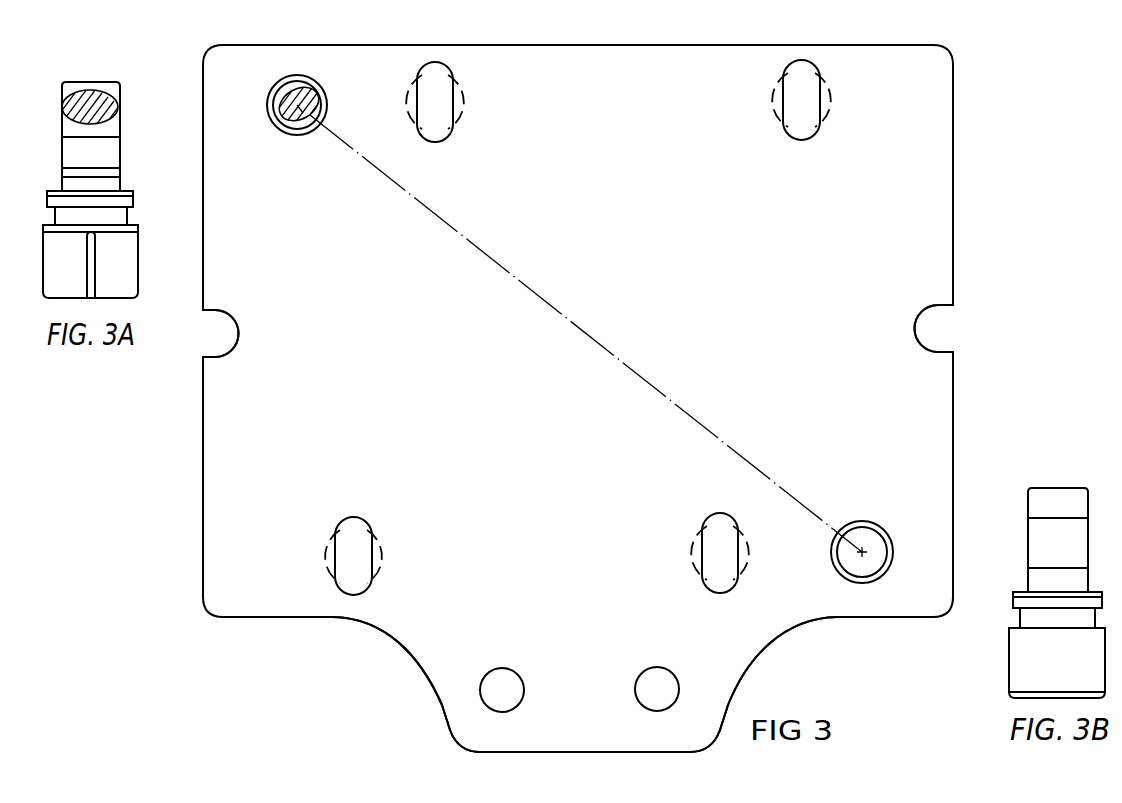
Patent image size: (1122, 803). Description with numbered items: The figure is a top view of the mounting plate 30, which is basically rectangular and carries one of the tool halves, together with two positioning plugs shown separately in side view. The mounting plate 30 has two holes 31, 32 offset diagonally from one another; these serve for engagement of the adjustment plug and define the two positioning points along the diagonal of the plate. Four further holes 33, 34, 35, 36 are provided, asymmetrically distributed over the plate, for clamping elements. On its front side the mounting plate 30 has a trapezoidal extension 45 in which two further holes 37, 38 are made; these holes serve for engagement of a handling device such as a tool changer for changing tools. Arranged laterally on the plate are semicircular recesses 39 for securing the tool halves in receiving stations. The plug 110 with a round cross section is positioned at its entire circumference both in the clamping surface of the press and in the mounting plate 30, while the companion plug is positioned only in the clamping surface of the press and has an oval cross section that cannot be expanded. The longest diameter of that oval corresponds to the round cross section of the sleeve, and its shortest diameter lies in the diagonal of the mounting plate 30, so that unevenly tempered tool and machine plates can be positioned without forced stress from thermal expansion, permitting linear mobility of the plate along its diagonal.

In FIG. 3, the mounting plate 30 is at (940, 166).
In FIG. 3, the hole 31 is at (314, 100).
In FIG. 3, the hole 32 is at (861, 530).
In FIG. 3, the hole 33 is at (432, 140).
In FIG. 3, the hole 34 is at (792, 128).
In FIG. 3, the hole 35 is at (356, 525).
In FIG. 3, the hole 36 is at (728, 527).
In FIG. 3, the hole 37 is at (508, 674).
In FIG. 3, the hole 38 is at (661, 674).
In FIG. 3, the semicircular recess 39 is at (228, 340).
In FIG. 3, the trapezoidal extension 45 is at (437, 700).
In FIG. 3A, the plug 110 is at (99, 168).
In FIG. 3B, the plug 110 is at (1040, 508).